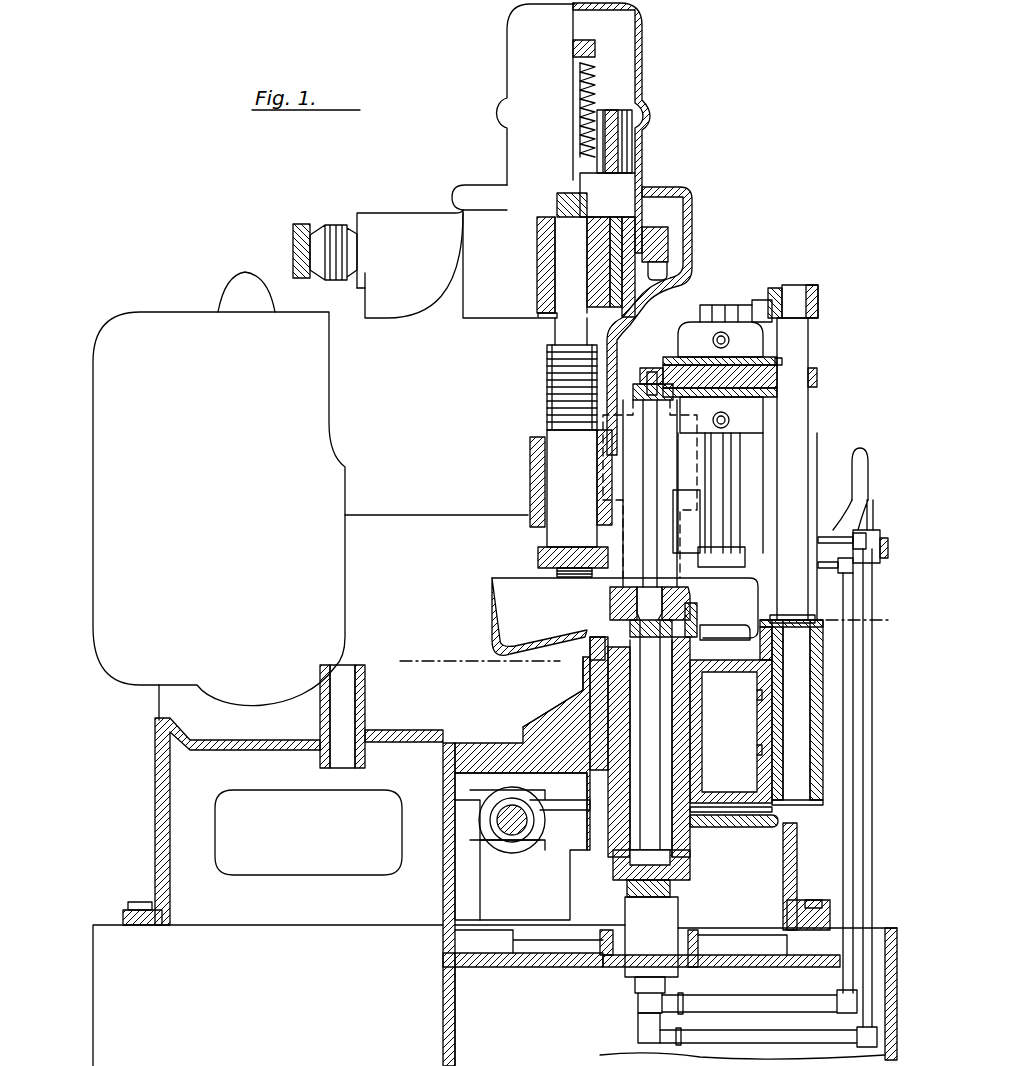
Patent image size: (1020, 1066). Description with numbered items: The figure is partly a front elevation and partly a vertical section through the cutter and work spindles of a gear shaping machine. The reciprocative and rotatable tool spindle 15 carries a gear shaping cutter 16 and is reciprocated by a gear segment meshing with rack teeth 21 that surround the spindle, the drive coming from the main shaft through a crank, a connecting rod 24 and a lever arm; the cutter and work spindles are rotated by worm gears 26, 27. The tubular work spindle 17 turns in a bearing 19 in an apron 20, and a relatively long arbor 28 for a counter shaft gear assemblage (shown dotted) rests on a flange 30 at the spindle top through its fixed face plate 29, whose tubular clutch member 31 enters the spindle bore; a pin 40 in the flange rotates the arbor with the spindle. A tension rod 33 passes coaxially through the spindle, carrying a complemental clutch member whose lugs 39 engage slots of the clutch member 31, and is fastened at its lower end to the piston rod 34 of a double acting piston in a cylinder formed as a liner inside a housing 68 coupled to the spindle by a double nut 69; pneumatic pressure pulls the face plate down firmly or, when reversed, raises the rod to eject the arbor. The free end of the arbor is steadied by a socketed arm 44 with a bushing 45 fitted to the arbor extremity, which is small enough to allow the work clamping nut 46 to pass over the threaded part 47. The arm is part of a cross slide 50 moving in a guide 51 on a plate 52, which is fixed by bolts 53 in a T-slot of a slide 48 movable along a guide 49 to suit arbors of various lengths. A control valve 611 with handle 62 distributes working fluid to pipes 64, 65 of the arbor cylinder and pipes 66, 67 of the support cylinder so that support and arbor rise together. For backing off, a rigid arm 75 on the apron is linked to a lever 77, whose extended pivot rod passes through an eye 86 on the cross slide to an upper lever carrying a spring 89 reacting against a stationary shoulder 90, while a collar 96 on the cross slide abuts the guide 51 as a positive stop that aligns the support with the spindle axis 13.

The centerline / axis 13 is at (885, 615).
The tool spindle 15 is at (571, 488).
The gear shaping cutter 16 is at (538, 557).
The tubular work spindle 17 is at (620, 672).
The bearing 19 is at (555, 735).
The apron 20 is at (590, 660).
The rack teeth 21 is at (545, 400).
The connecting rod 24 is at (590, 672).
The worm gear 26 is at (668, 262).
The worm gear 27 is at (750, 830).
The arbor 28 is at (655, 545).
The face plate 29 is at (610, 602).
The flange 30 is at (702, 633).
The bayonet joint clutch member 31 is at (598, 632).
The tension rod 33 is at (650, 773).
The piston rod 34 is at (627, 887).
The lugs 39 is at (651, 603).
The pin 40 is at (700, 622).
The socketed arm 44 is at (650, 375).
The bushing 45 is at (653, 370).
The work clamping nut 46 is at (640, 395).
The threaded part 47 is at (650, 410).
The slide 48 is at (728, 492).
The guide 49 is at (755, 545).
The cross slide 50 is at (705, 360).
The guide 51 is at (758, 360).
The plate 52 is at (755, 412).
The bolts 53 is at (713, 420).
The handle 62 is at (868, 472).
The control valve 611 is at (853, 512).
The pipe 64 is at (870, 710).
The pipe 65 is at (840, 795).
The pipe 66 is at (840, 540).
The pipe 67 is at (830, 565).
The housing 68 is at (651, 970).
The double nut 69 is at (613, 868).
The rigid arm 75 is at (718, 672).
The lever 77 is at (825, 700).
The eye 86 is at (818, 377).
The spring 89 is at (775, 288).
The stationary shoulder 90 is at (758, 300).
The collar 96 is at (778, 362).